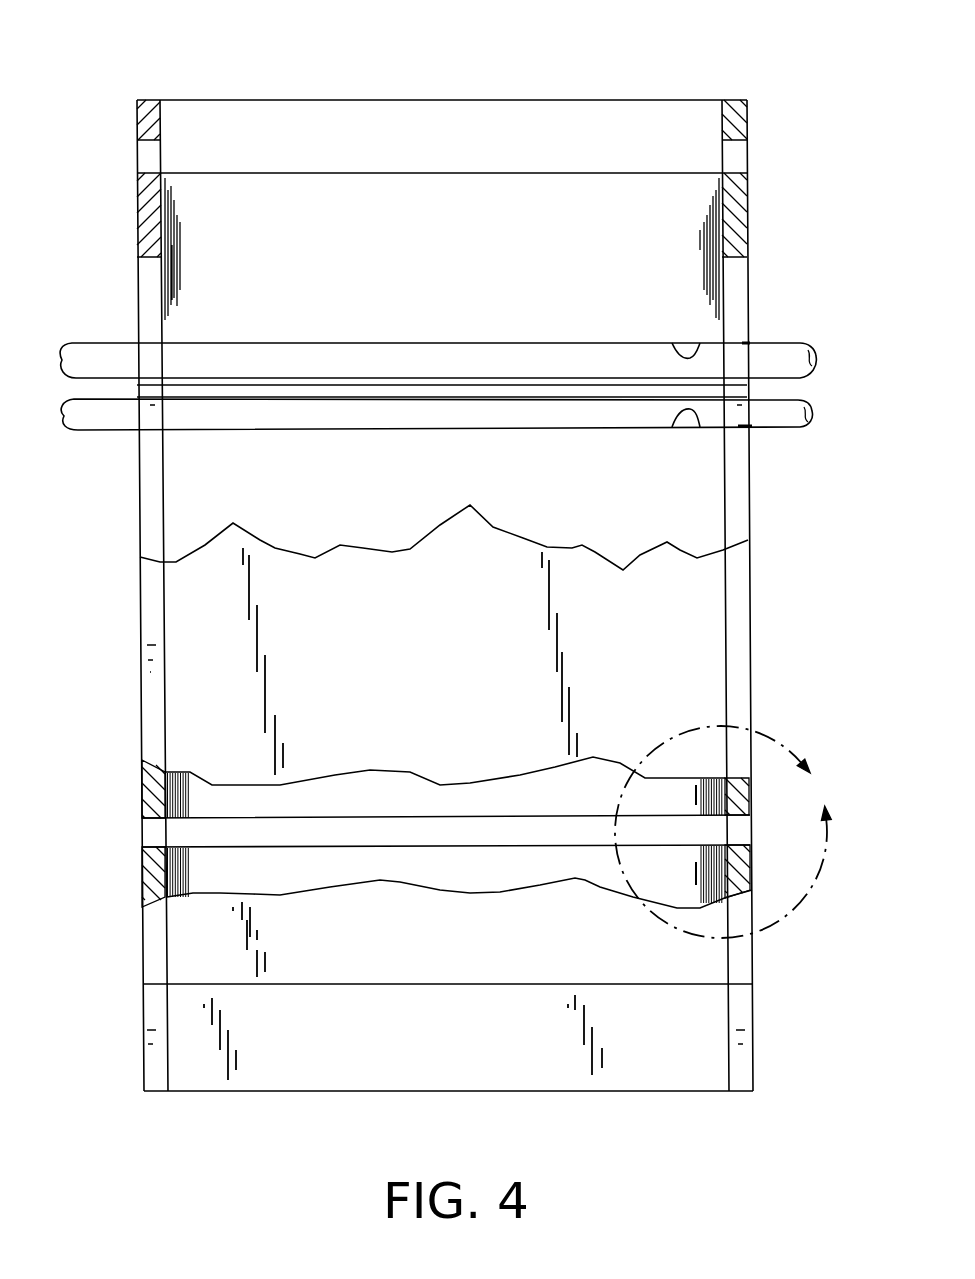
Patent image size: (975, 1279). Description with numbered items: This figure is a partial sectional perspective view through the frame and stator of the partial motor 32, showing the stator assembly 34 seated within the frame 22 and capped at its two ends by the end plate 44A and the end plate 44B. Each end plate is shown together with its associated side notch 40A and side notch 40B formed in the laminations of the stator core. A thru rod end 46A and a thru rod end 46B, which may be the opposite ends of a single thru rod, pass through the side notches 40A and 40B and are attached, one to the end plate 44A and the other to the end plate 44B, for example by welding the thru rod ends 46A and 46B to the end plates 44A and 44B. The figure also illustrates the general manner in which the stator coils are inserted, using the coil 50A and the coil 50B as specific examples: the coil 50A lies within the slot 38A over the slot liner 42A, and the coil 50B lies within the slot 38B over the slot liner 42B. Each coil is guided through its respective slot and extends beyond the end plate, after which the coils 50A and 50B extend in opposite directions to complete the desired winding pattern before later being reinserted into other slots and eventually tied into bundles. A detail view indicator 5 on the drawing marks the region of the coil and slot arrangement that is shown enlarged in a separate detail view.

The partial motor 32 is at (353, 68).
The frame 22 is at (528, 185).
The end plate 44A is at (148, 110).
The end plate 44B is at (735, 103).
The coil 50A is at (806, 348).
The coil 50B is at (813, 420).
The slot 38A is at (673, 345).
The slot 38B is at (673, 427).
The slot liner 42A is at (750, 342).
The slot liner 42B is at (752, 426).
The stator assembly 34 is at (708, 530).
The thru rod end 46A is at (142, 830).
The thru rod end 46B is at (740, 818).
The side notch 40A is at (142, 836).
The side notch 40B is at (752, 834).
The detail view indicator for FIG. 5 is at (735, 829).